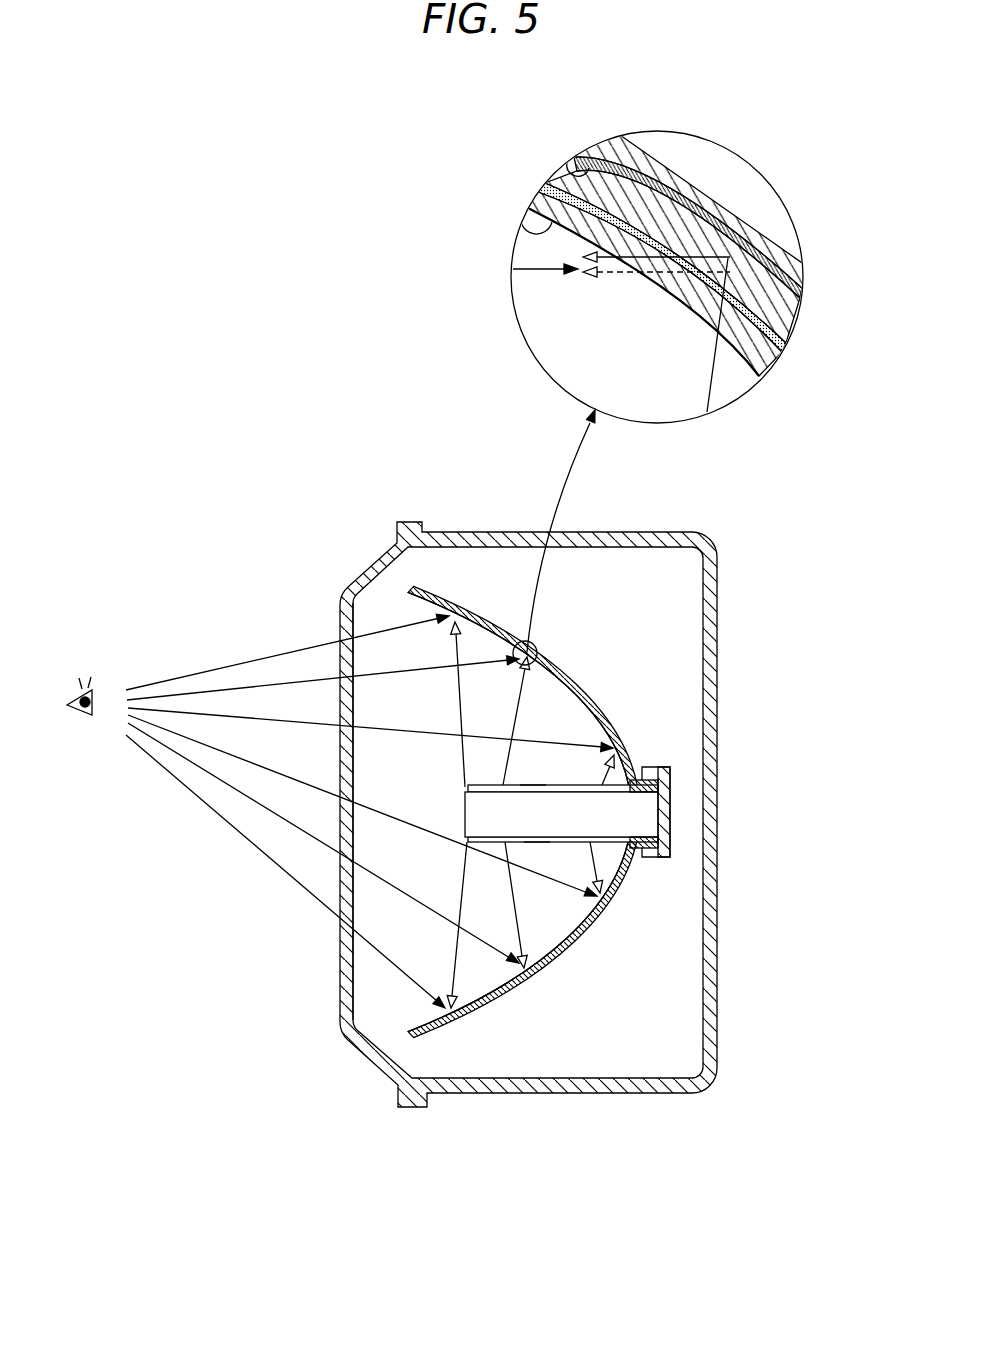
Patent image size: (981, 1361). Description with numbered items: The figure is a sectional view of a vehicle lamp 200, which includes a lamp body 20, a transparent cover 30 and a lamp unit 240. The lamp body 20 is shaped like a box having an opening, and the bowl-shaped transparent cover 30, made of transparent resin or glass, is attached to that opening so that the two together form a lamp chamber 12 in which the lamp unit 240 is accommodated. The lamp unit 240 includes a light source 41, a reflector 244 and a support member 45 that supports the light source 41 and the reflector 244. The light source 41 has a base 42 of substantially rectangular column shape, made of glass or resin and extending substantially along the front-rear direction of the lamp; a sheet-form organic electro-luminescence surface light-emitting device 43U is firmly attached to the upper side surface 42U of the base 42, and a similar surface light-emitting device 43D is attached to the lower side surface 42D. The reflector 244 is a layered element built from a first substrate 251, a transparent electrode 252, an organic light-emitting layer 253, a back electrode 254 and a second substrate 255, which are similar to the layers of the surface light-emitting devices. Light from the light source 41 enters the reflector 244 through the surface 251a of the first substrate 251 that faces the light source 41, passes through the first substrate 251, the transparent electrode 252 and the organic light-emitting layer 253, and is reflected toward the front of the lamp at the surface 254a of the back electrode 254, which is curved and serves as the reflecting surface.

The lamp chamber 12 is at (686, 580).
The lamp body 20 is at (717, 634).
The transparent cover 30 is at (338, 612).
The light source 41 is at (445, 774).
The base 42 is at (466, 808).
The upper side surface 42U is at (568, 785).
The lower side surface 42D is at (573, 842).
The surface light-emitting device 43U is at (533, 785).
The surface light-emitting device 43D is at (537, 842).
The support member 45 is at (650, 768).
The vehicle lamp 200 is at (541, 1171).
The lamp unit 240 is at (563, 634).
The reflector 244 is at (468, 612).
The first substrate 251 is at (763, 357).
The surface 251a is at (537, 230).
The transparent electrode 252 is at (773, 343).
The organic light-emitting layer 253 is at (783, 320).
The back electrode 254 is at (798, 298).
The surface 254a is at (567, 165).
The second substrate 255 is at (793, 272).